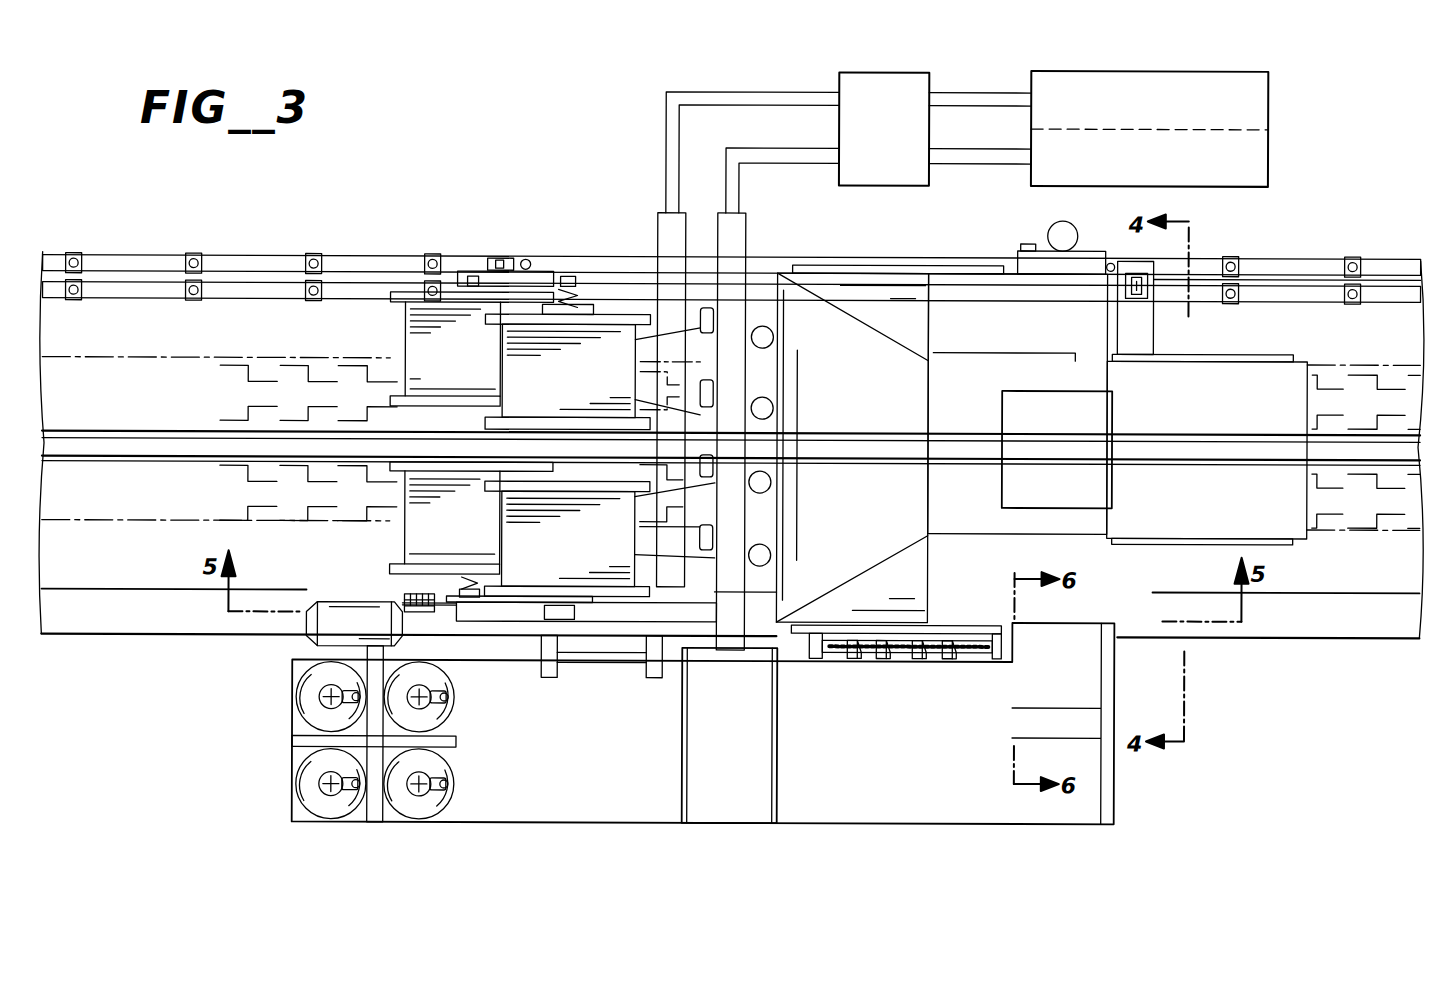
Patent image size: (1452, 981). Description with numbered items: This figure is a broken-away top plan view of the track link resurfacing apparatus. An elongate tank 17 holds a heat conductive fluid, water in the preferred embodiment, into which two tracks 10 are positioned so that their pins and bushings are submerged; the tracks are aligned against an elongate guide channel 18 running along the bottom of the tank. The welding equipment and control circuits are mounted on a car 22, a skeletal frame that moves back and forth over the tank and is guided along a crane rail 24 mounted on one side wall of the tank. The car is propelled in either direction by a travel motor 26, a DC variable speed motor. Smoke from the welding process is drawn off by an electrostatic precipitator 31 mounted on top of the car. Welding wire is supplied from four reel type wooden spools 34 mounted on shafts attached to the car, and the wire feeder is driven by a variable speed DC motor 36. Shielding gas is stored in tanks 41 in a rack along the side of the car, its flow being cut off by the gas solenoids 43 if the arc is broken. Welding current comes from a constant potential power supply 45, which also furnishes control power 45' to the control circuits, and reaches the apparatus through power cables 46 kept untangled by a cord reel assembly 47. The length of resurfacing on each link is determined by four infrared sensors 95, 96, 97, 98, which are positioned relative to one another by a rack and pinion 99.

The tracks 10 is at (238, 358).
The tank 17 is at (272, 256).
The guide channel 18 is at (175, 432).
The car 22 is at (1222, 690).
The crane rail 24 is at (1312, 282).
The travel motor 26 is at (330, 615).
The electrostatic precipitator 31 is at (940, 433).
The reel type wooden spools 34 is at (397, 306).
The variable speed DC motor 36 is at (746, 314).
The tanks 41 is at (305, 778).
The gas solenoids 43 is at (770, 400).
The power supply 45 is at (1181, 128).
The control power 45' is at (1166, 187).
The power cables 46 is at (667, 160).
The cord reel assembly 47 is at (890, 186).
The first infrared sensor 95 is at (946, 656).
The infrared sensor 96 is at (916, 656).
The infrared sensor 97 is at (880, 656).
The infrared sensor 98 is at (850, 656).
The rack and pinion 99 is at (980, 652).